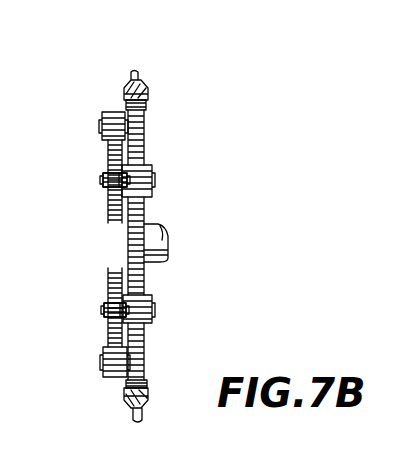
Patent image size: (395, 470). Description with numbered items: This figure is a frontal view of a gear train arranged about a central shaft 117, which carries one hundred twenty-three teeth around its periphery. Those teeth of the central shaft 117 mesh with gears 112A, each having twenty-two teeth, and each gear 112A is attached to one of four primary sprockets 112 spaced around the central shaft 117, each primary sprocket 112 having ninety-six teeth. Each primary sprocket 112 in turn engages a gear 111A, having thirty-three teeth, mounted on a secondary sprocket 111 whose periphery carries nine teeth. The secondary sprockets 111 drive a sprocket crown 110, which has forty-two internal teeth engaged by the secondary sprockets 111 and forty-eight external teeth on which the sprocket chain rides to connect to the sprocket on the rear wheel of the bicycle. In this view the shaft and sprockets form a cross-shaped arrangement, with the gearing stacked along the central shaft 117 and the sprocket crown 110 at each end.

The sprocket crown 110 is at (145, 83).
The secondary sprocket 111 is at (145, 108).
The gear 111A is at (107, 116).
The primary sprocket 112 is at (108, 207).
The gear 112A is at (147, 190).
The central shaft 117 is at (138, 252).